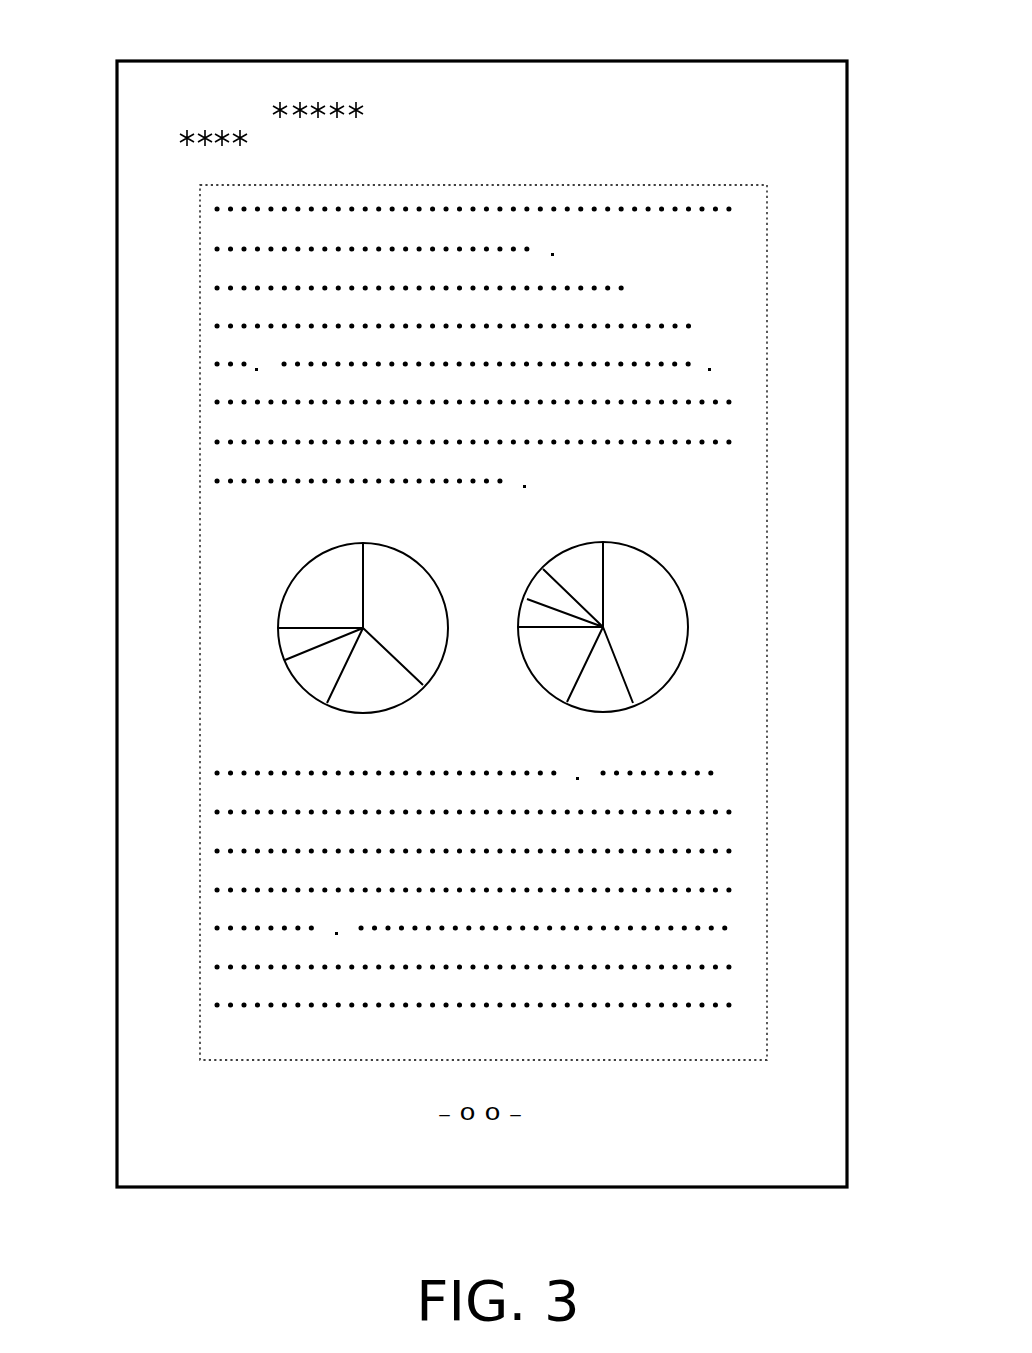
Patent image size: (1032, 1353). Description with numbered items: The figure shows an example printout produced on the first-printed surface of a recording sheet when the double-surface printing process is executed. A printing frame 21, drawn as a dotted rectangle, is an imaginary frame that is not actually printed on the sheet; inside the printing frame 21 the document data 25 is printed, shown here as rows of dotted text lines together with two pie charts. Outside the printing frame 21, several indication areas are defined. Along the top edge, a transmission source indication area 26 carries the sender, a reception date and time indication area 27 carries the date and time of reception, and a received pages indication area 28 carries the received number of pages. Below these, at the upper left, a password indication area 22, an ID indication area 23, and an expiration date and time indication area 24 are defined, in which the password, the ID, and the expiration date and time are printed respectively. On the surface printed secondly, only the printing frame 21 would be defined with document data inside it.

The printing frame 21 is at (767, 503).
The password indication area 22 is at (142, 102).
The ID indication area 23 is at (140, 133).
The expiration date and time indication area 24 is at (140, 168).
The document data 25 is at (710, 835).
The transmission source indication area 26 is at (205, 62).
The reception date and time indication area 27 is at (463, 61).
The received pages indication area 28 is at (692, 61).